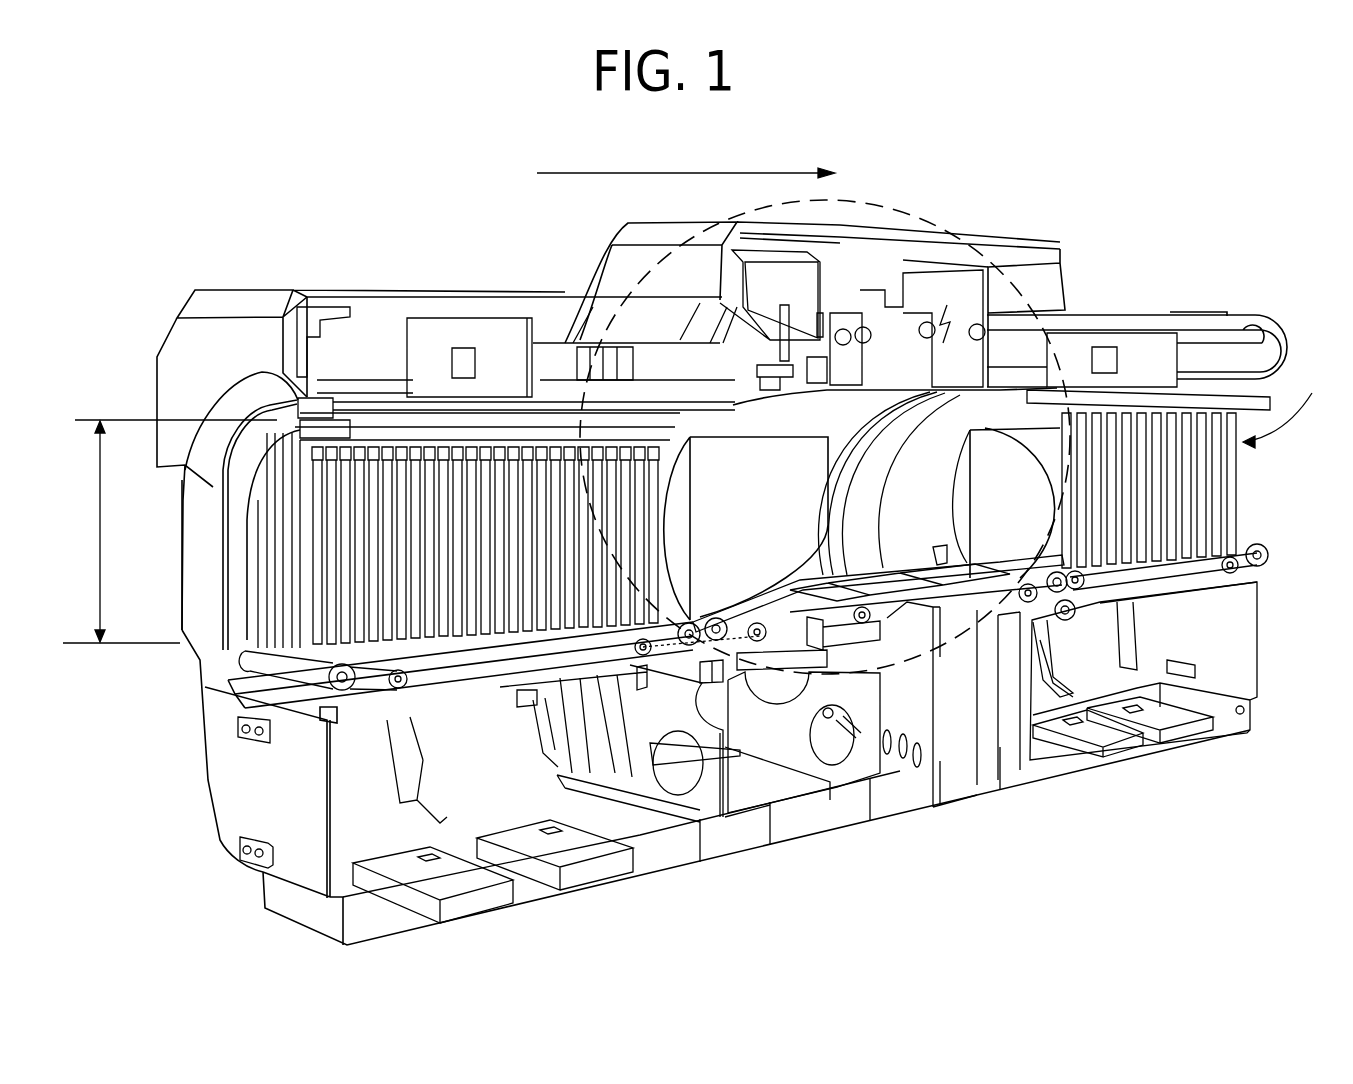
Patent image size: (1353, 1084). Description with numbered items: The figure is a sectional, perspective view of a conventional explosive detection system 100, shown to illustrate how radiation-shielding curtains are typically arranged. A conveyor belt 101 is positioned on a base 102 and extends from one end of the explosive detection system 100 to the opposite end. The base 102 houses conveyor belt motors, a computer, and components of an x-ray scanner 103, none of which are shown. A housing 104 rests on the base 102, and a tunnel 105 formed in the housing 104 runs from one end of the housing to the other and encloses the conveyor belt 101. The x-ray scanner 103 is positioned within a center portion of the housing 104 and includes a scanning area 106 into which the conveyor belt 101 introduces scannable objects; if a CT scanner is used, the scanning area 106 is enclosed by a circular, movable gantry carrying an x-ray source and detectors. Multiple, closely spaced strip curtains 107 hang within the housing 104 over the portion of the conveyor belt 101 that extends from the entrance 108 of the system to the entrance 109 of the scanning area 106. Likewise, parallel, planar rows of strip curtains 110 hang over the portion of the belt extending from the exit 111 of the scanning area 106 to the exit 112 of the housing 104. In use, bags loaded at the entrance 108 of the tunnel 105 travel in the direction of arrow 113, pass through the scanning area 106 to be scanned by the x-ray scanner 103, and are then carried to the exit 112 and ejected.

The explosive detection system 100 is at (156, 289).
The conveyor belt 101 is at (270, 660).
The base 102 is at (243, 774).
The x-ray scanner 103 is at (895, 212).
The housing 104 is at (474, 295).
The tunnel 105 is at (170, 531).
The scanning area 106 is at (920, 463).
The strip curtains 107 is at (453, 632).
The entrance 108 is at (257, 407).
The entrance of the scanning area 109 is at (717, 463).
The strip curtains 110 is at (1175, 520).
The exit of the scanning area 111 is at (1068, 410).
The exit 112 is at (1294, 412).
The arrow 113 is at (680, 173).